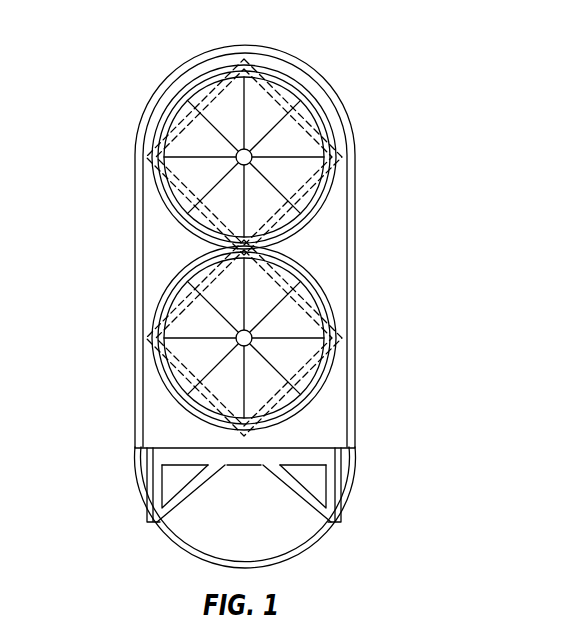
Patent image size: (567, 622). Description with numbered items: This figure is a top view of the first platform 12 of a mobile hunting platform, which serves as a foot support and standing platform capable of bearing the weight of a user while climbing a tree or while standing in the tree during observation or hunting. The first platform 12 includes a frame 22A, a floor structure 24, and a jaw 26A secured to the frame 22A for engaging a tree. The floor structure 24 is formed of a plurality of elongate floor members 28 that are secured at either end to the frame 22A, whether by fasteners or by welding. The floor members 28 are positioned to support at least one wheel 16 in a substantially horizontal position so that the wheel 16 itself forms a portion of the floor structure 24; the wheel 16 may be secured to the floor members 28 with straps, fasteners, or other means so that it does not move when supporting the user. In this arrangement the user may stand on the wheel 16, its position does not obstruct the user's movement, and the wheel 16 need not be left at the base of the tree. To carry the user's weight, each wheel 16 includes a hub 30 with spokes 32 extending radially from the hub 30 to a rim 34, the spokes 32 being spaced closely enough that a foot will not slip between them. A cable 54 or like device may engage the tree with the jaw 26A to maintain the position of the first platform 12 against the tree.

The first platform 12 is at (437, 284).
The wheel 16 is at (240, 225).
The frame 22A is at (355, 318).
The floor structure 24 is at (167, 250).
The jaw 26A is at (148, 468).
The elongate floor members 28 is at (268, 431).
The hub 30 is at (253, 155).
The spokes 32 is at (217, 125).
The rim 34 is at (188, 102).
The cable 54 is at (305, 553).